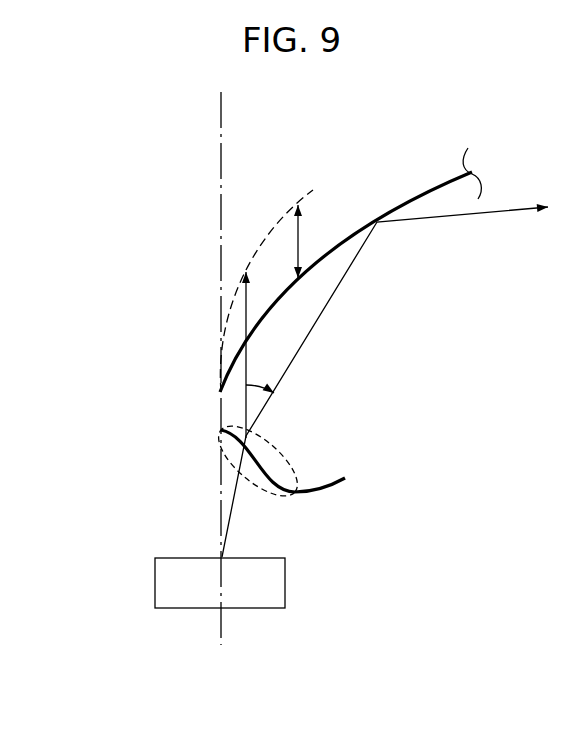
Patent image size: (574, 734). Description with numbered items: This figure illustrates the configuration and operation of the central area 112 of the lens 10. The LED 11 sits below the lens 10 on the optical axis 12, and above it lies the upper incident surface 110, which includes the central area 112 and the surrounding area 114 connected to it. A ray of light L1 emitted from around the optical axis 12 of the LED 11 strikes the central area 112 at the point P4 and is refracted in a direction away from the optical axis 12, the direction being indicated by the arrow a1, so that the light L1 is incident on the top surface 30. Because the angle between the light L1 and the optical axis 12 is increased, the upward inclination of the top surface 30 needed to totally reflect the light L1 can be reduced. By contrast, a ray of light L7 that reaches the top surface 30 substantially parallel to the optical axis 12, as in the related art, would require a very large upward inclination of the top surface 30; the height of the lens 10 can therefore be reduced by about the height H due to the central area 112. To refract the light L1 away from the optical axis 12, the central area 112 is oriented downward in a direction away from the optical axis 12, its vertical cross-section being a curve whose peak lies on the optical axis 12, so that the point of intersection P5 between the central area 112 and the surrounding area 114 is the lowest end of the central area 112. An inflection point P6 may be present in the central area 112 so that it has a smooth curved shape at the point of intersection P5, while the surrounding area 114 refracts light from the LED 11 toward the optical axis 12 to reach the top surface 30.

The lens 10 is at (60, 133).
The LED 11 is at (268, 590).
The optical axis 12 is at (220, 165).
The top surface 30 is at (407, 200).
The upper incident surface 110 is at (242, 478).
The central area 112 is at (221, 484).
The surrounding area 114 is at (336, 455).
The point P4 is at (256, 443).
The point of intersection P5 is at (295, 494).
The inflection point P6 is at (257, 472).
The height H is at (289, 241).
The light ray L1 is at (385, 380).
The light ray L7 is at (261, 355).
The arrow a1 is at (260, 397).